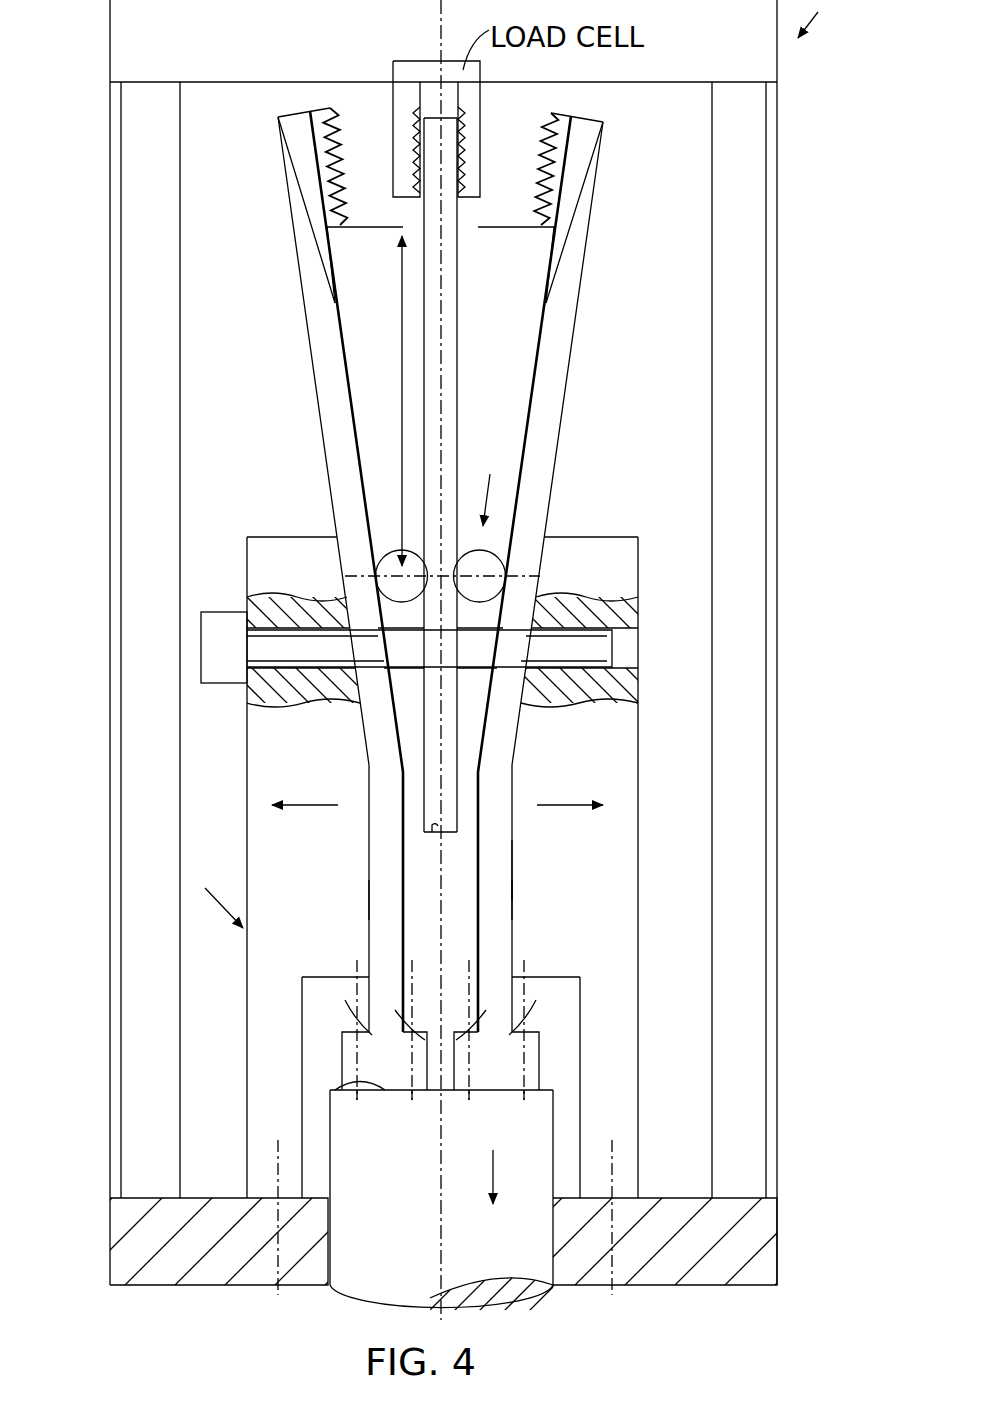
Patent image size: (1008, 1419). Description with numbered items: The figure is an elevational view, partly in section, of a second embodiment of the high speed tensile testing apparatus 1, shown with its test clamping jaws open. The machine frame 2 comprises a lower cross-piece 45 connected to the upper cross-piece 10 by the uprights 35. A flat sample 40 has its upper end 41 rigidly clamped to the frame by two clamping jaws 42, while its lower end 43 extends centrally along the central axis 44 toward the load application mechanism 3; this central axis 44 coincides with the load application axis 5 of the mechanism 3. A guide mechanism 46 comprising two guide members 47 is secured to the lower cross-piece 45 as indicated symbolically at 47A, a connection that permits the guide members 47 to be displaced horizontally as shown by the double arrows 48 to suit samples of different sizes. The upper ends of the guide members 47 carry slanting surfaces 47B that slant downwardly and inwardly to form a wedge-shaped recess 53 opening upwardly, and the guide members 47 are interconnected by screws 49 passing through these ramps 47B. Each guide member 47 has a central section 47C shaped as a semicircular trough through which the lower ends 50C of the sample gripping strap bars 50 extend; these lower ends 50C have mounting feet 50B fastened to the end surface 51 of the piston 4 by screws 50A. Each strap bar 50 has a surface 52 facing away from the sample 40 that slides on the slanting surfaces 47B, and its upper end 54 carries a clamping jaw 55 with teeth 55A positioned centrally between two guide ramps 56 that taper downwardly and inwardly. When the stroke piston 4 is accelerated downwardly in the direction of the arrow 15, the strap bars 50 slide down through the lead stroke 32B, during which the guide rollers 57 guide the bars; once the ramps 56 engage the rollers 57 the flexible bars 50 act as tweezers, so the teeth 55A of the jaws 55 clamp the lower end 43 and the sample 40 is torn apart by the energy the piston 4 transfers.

The apparatus 1 is at (817, 21).
The machine frame 2 is at (735, 400).
The load application mechanism 3 is at (520, 1121).
The stroke piston 4 is at (518, 1243).
The load application axis 5 is at (440, 1175).
The upper cross-piece 10 is at (652, 62).
The arrow 15 is at (519, 1169).
The lead stroke 32B is at (400, 362).
The uprights 35 is at (150, 397).
The flat sample 40 is at (447, 356).
The upper end of sample 41 is at (432, 170).
The clamping jaws 42 is at (413, 98).
The lower end of sample 43 is at (434, 830).
The central axis 44 is at (440, 408).
The lower cross-piece 45 is at (703, 1250).
The guide mechanism 46 is at (215, 892).
The guide members 47 is at (280, 993).
The connection 47A is at (278, 1190).
The slanting surfaces 47B is at (360, 605).
The central section 47C is at (515, 866).
The double arrows 48 is at (437, 776).
The screws 49 is at (220, 650).
The sample gripping strap bars 50 is at (340, 600).
The screws 50A is at (372, 1005).
The mounting feet 50B is at (355, 1058).
The lower ends of strap bars 50C is at (385, 900).
The end surface of piston 51 is at (335, 1086).
The surface of strap bar 52 is at (305, 345).
The wedge-shaped recess 53 is at (495, 484).
The upper end of strap bar 54 is at (290, 182).
The clamping jaws 55 is at (310, 135).
The teeth 55A is at (345, 227).
The guide ramps 56 is at (313, 225).
The guide rollers 57 is at (395, 555).